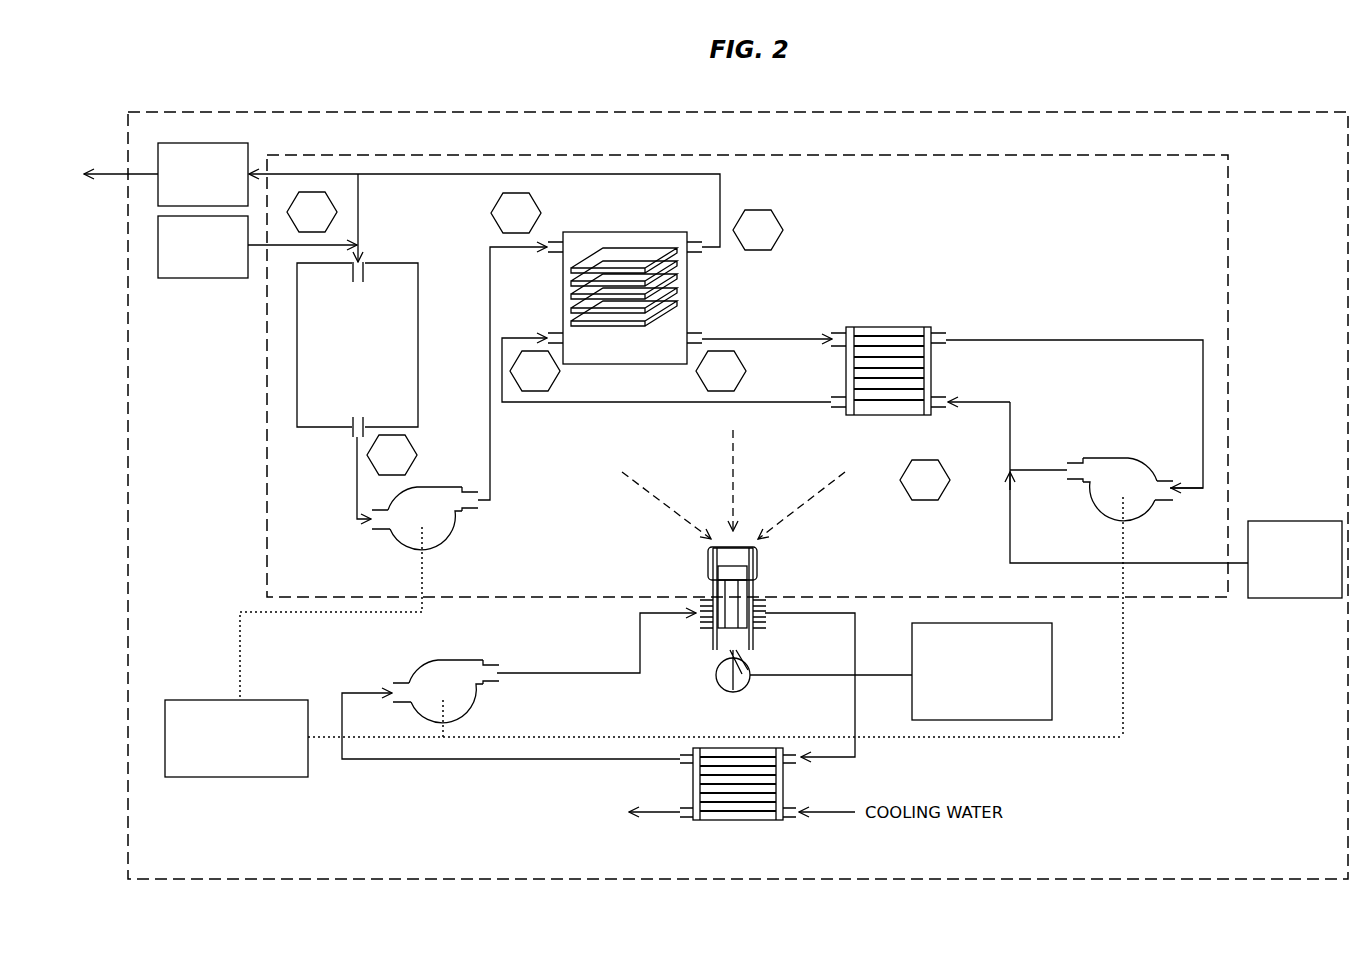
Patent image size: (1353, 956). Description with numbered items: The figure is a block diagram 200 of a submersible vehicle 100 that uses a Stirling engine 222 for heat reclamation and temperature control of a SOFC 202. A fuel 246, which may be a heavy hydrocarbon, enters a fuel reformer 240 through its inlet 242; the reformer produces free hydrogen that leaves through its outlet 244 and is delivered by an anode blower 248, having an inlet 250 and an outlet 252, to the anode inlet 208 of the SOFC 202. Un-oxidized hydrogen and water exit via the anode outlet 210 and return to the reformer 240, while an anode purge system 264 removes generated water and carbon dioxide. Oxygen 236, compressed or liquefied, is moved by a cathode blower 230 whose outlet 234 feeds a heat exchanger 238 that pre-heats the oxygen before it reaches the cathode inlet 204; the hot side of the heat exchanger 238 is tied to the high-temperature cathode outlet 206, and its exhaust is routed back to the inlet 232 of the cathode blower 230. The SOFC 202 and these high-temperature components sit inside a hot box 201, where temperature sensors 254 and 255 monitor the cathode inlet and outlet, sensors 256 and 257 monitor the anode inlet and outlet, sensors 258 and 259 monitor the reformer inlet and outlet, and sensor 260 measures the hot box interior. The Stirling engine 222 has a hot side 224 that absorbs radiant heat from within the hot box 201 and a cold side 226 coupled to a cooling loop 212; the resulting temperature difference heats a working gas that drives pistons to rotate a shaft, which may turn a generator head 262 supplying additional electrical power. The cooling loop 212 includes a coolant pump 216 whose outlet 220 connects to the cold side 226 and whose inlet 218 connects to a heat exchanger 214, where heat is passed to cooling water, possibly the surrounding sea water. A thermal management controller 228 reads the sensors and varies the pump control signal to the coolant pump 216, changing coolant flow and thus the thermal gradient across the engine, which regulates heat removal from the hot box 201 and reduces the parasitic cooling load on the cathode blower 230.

The vehicle 100 is at (1157, 111).
The block diagram 200 is at (996, 66).
The hot box 201 is at (1230, 198).
The SOFC 202 is at (624, 298).
The cathode inlet 204 is at (546, 332).
The cathode outlet 206 is at (706, 332).
The anode inlet 208 is at (545, 256).
The anode outlet 210 is at (706, 255).
The cooling loop 212 is at (494, 794).
The heat exchanger 214 is at (755, 822).
The coolant pump 216 is at (468, 700).
The inlet 218 is at (445, 670).
The outlet 220 is at (513, 650).
The Stirling engine 222 is at (731, 613).
The hot side 224 is at (761, 558).
The cold side 226 is at (771, 624).
The thermal management controller 228 is at (221, 766).
The cathode blower 230 is at (1122, 475).
The inlet 232 is at (1173, 501).
The outlet 234 is at (1066, 479).
The oxygen 236 is at (1279, 586).
The heat exchanger 238 is at (898, 327).
The fuel reformer 240 is at (341, 377).
The inlet 242 is at (365, 258).
The outlet 244 is at (352, 442).
The fuel 246 is at (187, 273).
The anode blower 248 is at (427, 510).
The inlet 250 is at (357, 547).
The fuel blower outlet 252 is at (496, 525).
The temperature sensor 254 is at (519, 380).
The temperature sensor 255 is at (705, 380).
The temperature sensor 256 is at (500, 222).
The temperature sensor 257 is at (742, 239).
The temperature sensor 258 is at (296, 221).
The temperature sensor 259 is at (376, 464).
The temperature sensor 260 is at (909, 489).
The generator head 262 is at (966, 706).
The anode purge system 264 is at (187, 199).